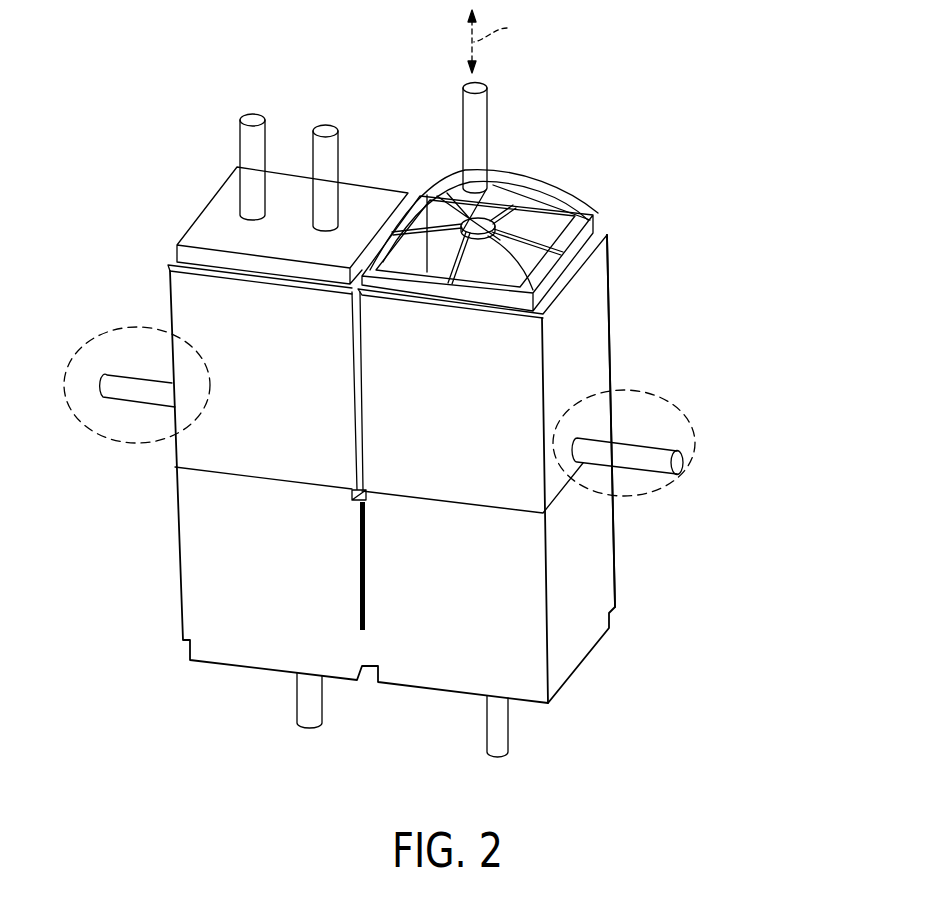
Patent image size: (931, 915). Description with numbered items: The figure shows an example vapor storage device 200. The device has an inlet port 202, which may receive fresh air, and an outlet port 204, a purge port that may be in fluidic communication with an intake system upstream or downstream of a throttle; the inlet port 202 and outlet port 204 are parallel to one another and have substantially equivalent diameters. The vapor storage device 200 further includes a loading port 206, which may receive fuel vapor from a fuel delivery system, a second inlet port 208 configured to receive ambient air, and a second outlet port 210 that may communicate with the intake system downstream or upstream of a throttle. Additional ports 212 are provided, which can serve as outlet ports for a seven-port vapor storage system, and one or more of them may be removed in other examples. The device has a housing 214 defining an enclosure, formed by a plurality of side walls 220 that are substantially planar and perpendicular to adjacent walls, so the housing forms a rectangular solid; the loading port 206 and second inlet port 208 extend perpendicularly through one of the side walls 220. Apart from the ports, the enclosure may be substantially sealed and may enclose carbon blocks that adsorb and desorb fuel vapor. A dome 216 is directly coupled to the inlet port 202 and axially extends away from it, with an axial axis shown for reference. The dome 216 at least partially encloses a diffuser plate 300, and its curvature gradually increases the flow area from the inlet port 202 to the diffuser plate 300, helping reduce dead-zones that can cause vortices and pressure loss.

The vapor storage device 200 is at (445, 384).
The inlet port 202 is at (487, 132).
The outlet port 204 is at (508, 728).
The loading port 206 is at (340, 160).
The second inlet port 208 is at (240, 147).
The second outlet port 210 is at (322, 698).
The ports 212 is at (112, 373).
The housing 214 is at (608, 337).
The dome 216 is at (537, 180).
The side walls 220 is at (208, 233).
The diffuser plate 300 is at (505, 218).